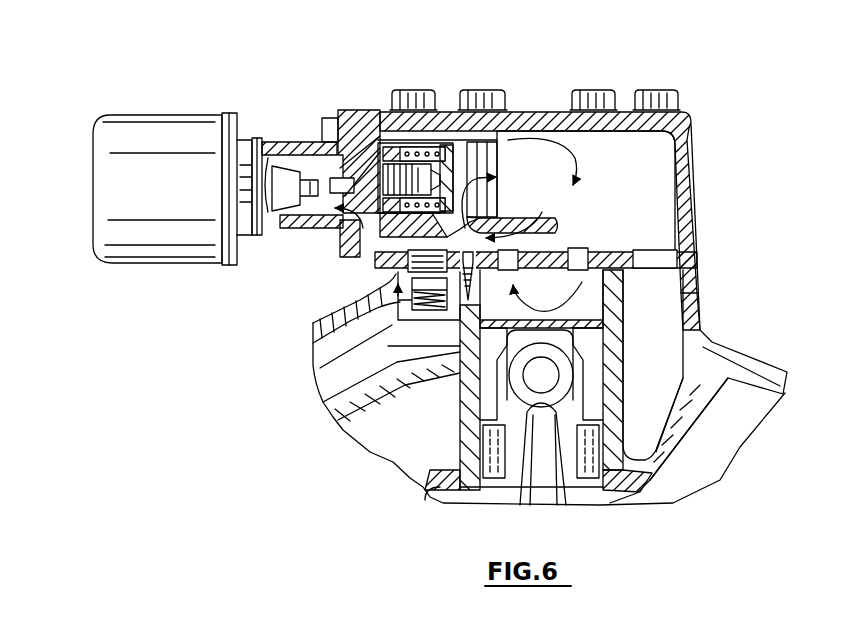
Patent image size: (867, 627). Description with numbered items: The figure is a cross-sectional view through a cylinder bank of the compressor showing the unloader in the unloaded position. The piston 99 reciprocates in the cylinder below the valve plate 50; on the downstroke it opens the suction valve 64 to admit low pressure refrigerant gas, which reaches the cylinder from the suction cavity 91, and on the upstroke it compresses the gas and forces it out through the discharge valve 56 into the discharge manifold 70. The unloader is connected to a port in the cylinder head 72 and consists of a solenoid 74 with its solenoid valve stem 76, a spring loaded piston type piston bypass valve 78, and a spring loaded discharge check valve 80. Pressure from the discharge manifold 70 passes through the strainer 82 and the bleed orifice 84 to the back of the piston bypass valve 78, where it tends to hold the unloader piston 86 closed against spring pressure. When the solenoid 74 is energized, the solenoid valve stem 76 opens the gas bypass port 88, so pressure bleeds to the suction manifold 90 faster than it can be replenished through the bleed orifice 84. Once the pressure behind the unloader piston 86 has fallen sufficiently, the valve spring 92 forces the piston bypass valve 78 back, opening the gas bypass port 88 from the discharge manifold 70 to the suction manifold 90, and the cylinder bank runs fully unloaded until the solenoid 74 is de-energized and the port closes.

The valve plate 50 is at (695, 259).
The discharge valve 56 is at (528, 214).
The suction valve 64 is at (530, 273).
The discharge manifold 70 is at (332, 407).
The cylinder head 72 is at (687, 112).
The solenoid 74 is at (123, 250).
The solenoid valve stem 76 is at (286, 172).
The piston bypass valve 78 is at (488, 10).
The discharge check valve 80 is at (392, 303).
The strainer 82 is at (348, 258).
The bleed orifice 84 is at (337, 246).
The unloader piston 86 is at (441, 150).
The gas bypass port 88 is at (355, 165).
The suction manifold 90 is at (578, 248).
The suction cavity 91 is at (665, 219).
The valve spring 92 is at (421, 150).
The piston 99 is at (550, 490).